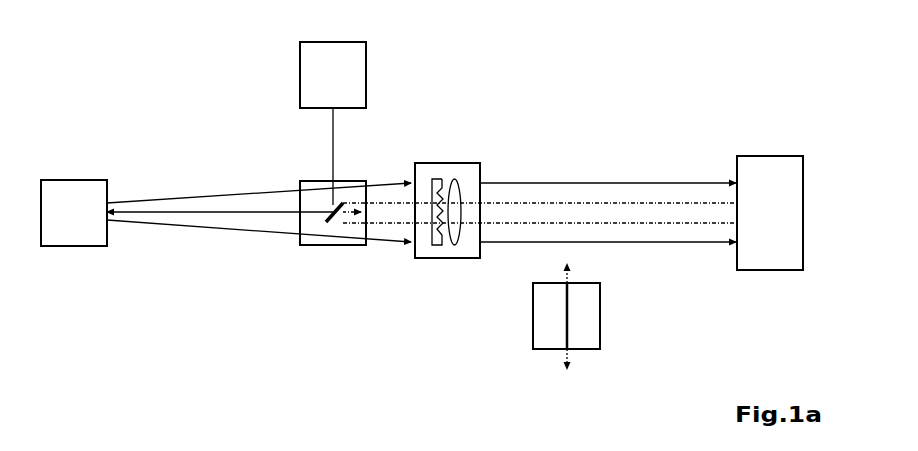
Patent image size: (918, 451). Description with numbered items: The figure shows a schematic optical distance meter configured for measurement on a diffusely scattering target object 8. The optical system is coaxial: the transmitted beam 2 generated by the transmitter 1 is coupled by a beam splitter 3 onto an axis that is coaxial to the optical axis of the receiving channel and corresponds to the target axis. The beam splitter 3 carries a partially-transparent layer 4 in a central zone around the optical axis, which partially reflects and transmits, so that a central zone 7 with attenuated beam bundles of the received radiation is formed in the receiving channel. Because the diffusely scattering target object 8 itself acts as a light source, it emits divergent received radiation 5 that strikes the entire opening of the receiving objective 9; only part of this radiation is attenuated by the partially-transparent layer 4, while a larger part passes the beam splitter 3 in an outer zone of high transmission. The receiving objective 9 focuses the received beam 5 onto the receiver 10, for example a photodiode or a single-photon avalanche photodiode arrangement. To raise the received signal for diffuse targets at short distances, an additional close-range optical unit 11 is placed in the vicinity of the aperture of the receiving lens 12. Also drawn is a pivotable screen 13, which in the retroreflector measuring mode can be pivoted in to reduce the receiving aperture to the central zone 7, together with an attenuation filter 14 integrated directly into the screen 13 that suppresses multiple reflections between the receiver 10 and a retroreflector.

The transmitter 1 is at (304, 108).
The transmitted beam 2 is at (259, 164).
The beam splitter 3 is at (365, 180).
The partially-transparent layer 4 is at (286, 169).
The received beam 5 is at (259, 267).
The central zone 7 is at (540, 172).
The diffusely scattering target object 8 is at (67, 190).
The receiving objective 9 is at (480, 180).
The receiver 10 is at (787, 184).
The close-range optical unit 11 is at (409, 243).
The receiving lens 12 is at (479, 243).
The screen 13 is at (599, 336).
The attenuation filter 14 is at (505, 326).